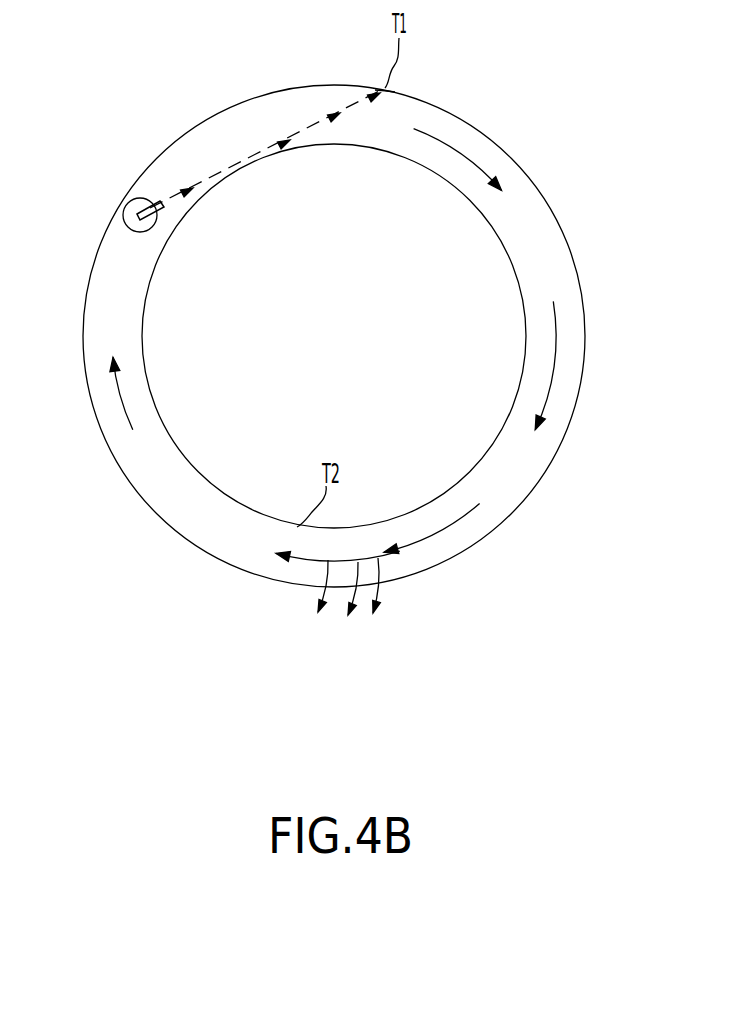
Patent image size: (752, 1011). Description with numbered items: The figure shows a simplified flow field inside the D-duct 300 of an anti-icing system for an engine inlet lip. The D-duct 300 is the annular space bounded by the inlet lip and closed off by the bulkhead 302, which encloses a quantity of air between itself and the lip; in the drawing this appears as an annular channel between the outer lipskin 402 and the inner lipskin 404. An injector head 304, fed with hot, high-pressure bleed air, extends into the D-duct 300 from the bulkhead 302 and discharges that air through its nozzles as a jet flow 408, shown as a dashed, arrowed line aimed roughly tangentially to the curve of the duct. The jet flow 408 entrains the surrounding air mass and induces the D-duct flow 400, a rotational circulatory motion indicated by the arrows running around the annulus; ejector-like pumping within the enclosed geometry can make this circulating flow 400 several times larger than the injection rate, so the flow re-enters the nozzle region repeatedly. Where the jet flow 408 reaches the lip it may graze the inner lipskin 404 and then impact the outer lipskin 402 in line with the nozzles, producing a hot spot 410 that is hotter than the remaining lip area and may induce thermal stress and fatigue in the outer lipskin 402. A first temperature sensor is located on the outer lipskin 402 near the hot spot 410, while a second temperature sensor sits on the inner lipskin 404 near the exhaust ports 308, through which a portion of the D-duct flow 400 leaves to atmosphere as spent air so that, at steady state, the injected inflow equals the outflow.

The D-duct 300 is at (545, 128).
The bulkhead 302 is at (531, 224).
The injector head 304 is at (133, 191).
The exhaust ports 308 is at (395, 592).
The D-duct flow 400 is at (557, 337).
The outer lipskin 402 is at (558, 218).
The inner lipskin 404 is at (492, 233).
The jet flow 408 is at (243, 158).
The hot spot 410 is at (385, 88).